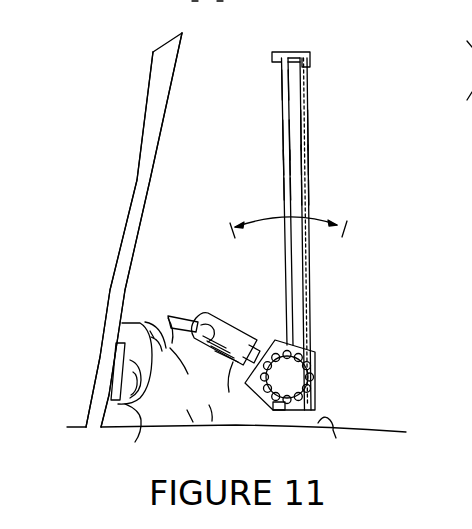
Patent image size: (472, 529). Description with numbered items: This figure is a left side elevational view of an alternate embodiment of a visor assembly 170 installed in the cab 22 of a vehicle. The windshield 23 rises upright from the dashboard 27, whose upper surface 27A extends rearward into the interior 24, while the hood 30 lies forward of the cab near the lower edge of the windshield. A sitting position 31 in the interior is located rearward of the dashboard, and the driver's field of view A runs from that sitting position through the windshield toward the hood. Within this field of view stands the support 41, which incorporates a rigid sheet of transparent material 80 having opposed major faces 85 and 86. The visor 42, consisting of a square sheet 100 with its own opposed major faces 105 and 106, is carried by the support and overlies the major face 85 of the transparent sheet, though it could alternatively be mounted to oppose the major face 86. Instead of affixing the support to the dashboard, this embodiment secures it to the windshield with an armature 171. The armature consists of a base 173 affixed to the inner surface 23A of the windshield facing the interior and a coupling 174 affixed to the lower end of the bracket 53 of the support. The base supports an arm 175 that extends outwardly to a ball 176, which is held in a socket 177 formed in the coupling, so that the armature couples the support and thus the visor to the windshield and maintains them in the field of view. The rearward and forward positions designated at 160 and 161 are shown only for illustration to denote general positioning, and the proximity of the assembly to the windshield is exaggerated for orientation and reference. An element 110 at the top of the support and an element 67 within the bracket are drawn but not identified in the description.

The cab 22 is at (177, 34).
The windshield 23 is at (132, 182).
The inner surface of windshield 23A is at (154, 158).
The hood 30 is at (77, 422).
The dashboard 27 is at (355, 423).
The upper surface of dashboard 27A is at (343, 440).
The cap 110 is at (275, 52).
The sheet 100 is at (311, 88).
The support 41 is at (278, 132).
The visor 42 is at (311, 130).
The sheet of transparent material 80 is at (279, 86).
The major face 106 is at (292, 161).
The major face 105 is at (308, 162).
The major face 86 is at (282, 185).
The major face 85 is at (293, 198).
The sitting position 31 is at (430, 114).
The interior 24 is at (424, 213).
The rearward position 160 is at (345, 235).
The forward position 161 is at (228, 232).
The visor assembly 170 is at (315, 37).
The field of view A is at (352, 90).
The armature 171 is at (153, 291).
The arm 175 is at (168, 313).
The ball 176 is at (207, 309).
The socket 177 is at (191, 356).
The coupling 174 is at (219, 393).
The base 173 is at (151, 434).
The bracket 53 is at (289, 347).
The gear 67 is at (311, 376).